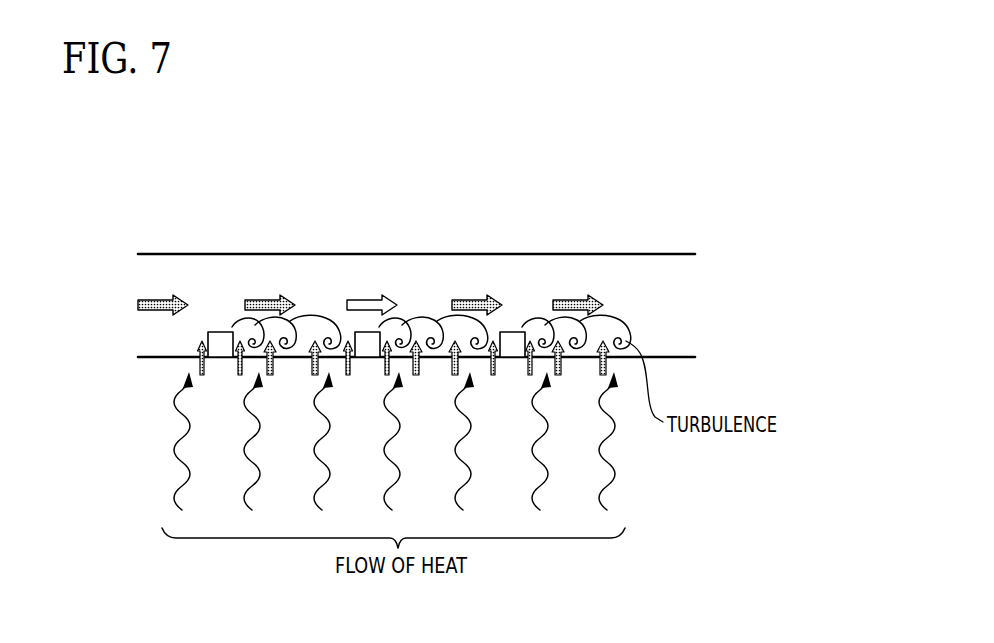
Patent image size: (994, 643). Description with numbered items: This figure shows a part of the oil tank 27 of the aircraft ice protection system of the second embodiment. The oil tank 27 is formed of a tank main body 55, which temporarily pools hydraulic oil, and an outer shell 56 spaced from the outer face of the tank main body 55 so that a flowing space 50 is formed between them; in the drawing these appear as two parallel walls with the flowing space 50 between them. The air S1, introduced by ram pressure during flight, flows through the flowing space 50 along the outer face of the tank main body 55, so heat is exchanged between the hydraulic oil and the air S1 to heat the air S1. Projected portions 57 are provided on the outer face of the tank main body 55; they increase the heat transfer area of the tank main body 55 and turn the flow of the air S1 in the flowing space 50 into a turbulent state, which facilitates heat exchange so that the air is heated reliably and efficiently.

The oil tank 27 is at (740, 178).
The flowing space 50 is at (546, 263).
The tank main body 55 is at (667, 357).
The outer shell 56 is at (628, 262).
The projected portions 57 is at (220, 332).
The air S1 is at (153, 298).